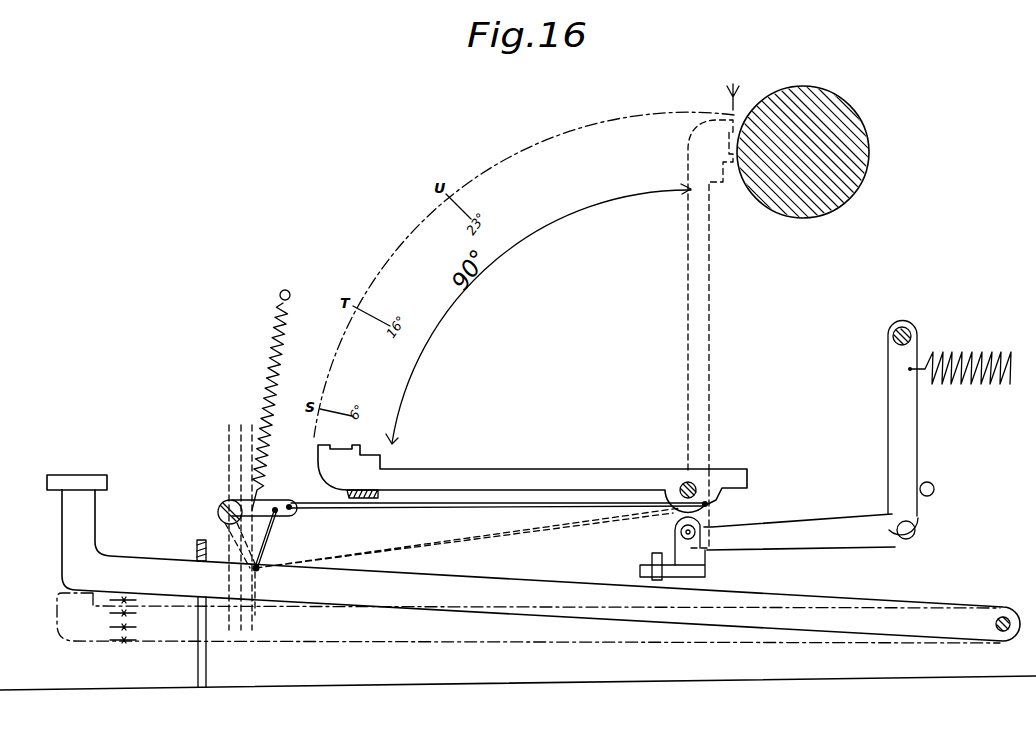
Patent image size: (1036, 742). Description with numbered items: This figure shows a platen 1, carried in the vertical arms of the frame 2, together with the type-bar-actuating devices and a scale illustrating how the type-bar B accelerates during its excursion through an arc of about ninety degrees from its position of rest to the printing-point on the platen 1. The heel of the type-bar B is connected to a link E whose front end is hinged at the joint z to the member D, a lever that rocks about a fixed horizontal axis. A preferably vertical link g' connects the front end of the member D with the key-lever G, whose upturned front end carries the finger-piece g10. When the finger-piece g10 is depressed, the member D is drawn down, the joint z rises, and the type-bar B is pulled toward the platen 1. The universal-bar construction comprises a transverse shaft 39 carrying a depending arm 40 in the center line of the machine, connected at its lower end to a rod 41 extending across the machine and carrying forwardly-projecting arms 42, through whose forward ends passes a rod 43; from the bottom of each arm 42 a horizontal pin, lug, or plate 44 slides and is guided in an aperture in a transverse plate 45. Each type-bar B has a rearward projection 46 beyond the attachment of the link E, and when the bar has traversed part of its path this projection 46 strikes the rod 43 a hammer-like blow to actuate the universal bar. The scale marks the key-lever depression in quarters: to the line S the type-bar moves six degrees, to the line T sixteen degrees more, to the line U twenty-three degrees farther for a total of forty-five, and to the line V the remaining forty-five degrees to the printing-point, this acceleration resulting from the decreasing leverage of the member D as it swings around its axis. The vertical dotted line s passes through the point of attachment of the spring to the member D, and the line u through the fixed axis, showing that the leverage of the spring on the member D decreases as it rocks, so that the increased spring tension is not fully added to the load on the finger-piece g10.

The platen 1 is at (862, 172).
The frame 2 is at (271, 350).
The transverse shaft 39 is at (888, 335).
The depending arm 40 is at (892, 410).
The rod 41 is at (912, 532).
The forwardly-projecting arm 42 is at (813, 526).
The rod 43 is at (676, 532).
The pin, lug, or plate 44 is at (640, 569).
The transverse plate 45 is at (652, 557).
The projection 46 is at (747, 477).
The type-bar B is at (470, 470).
The link E is at (442, 505).
The key-lever G is at (473, 585).
The member D is at (268, 504).
The link g' is at (452, 561).
The finger-piece g10 is at (96, 477).
The line S is at (130, 600).
The line T is at (131, 613).
The line U is at (131, 627).
The line V is at (131, 640).
The vertical dotted line u is at (228, 518).
The joint or hinge z is at (240, 518).
The vertical dotted line s is at (251, 518).